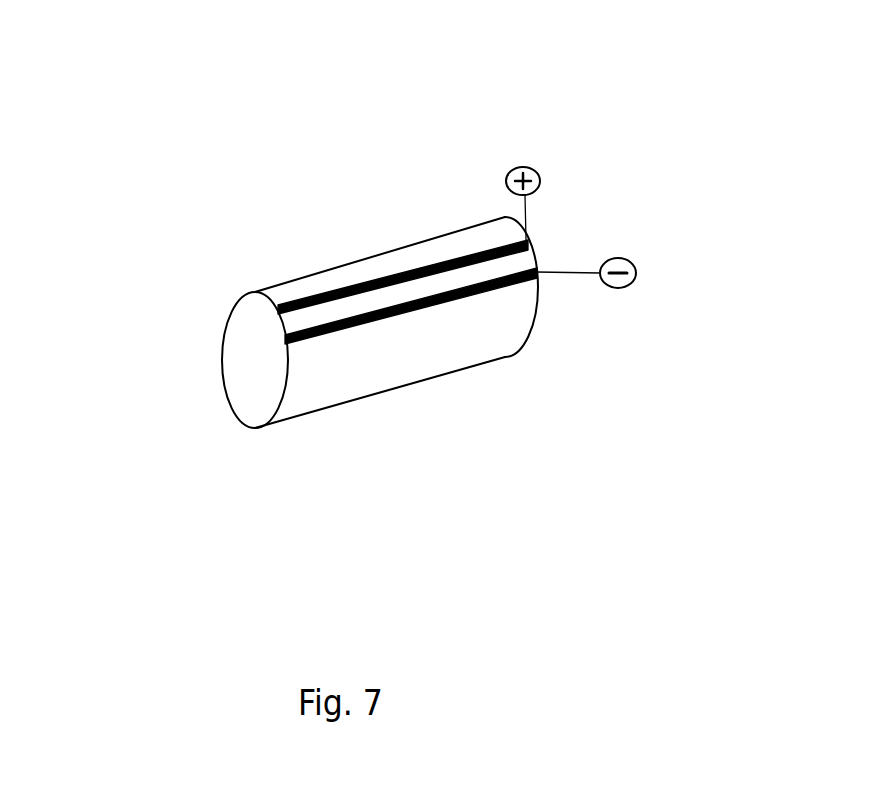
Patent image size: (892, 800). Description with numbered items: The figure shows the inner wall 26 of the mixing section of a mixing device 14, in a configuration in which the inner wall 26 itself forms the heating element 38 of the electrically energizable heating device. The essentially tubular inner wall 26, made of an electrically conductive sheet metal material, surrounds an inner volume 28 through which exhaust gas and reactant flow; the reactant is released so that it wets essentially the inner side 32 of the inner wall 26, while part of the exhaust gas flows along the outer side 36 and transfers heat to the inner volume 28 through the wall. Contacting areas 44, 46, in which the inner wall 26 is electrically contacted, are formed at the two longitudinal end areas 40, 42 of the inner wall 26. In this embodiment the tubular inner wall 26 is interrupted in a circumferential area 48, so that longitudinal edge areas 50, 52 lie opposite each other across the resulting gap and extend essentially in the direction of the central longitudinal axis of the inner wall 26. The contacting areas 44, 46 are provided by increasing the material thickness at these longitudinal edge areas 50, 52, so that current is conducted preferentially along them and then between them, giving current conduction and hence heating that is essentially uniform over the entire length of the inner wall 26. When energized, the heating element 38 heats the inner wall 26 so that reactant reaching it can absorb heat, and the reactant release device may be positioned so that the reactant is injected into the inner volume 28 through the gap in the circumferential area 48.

The mixing device 14 is at (371, 272).
The inner wall 26 is at (333, 266).
The inner volume 28 is at (255, 323).
The inner side 32 is at (244, 396).
The outer side 36 is at (357, 385).
The heating element 38 is at (500, 358).
The first longitudinal end area 40 is at (178, 347).
The second longitudinal end area 42 is at (558, 238).
The first contacting area 44 is at (418, 268).
The second contacting area 46 is at (497, 283).
The circumferential area 48 is at (418, 297).
The first longitudinal edge area 50 is at (293, 298).
The second longitudinal edge area 52 is at (328, 345).